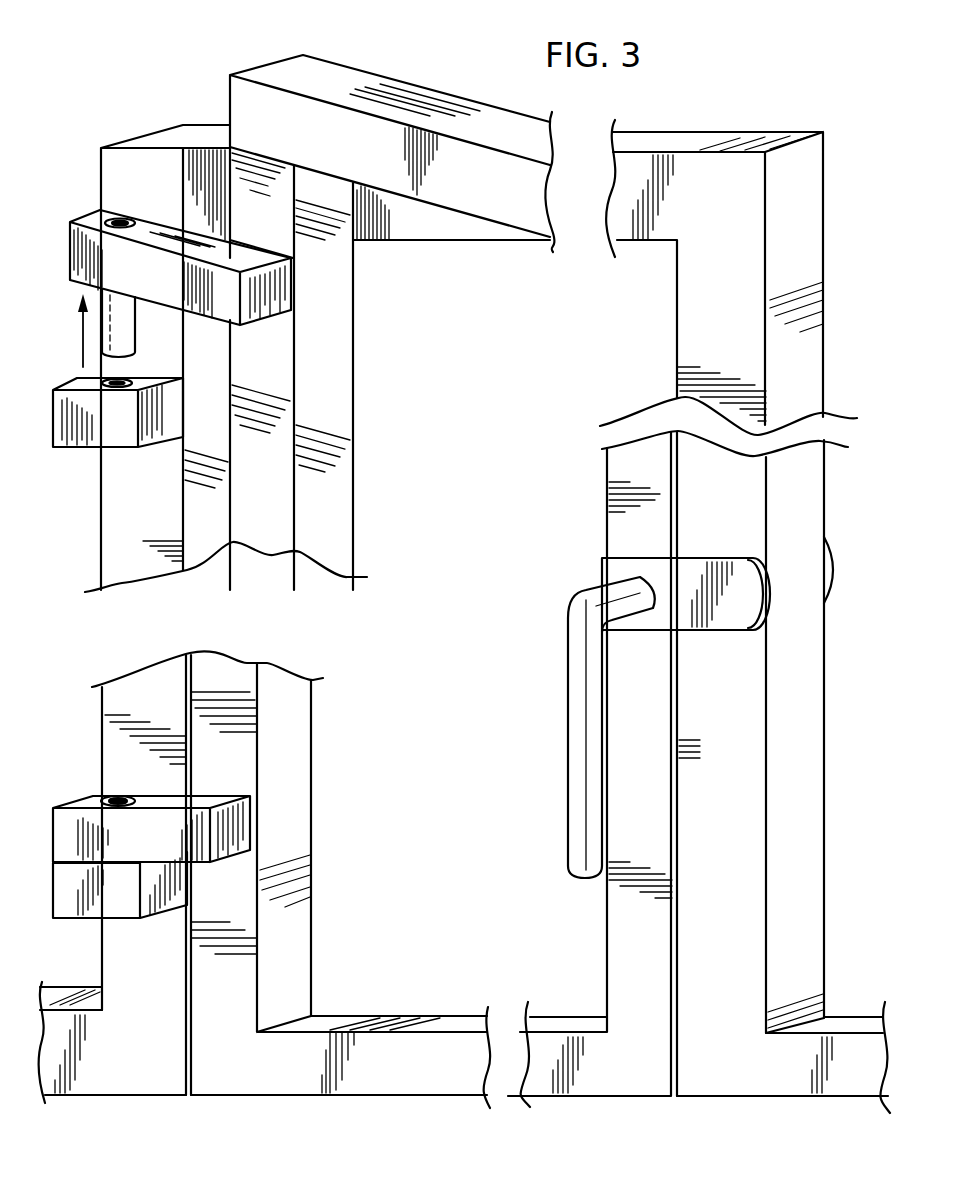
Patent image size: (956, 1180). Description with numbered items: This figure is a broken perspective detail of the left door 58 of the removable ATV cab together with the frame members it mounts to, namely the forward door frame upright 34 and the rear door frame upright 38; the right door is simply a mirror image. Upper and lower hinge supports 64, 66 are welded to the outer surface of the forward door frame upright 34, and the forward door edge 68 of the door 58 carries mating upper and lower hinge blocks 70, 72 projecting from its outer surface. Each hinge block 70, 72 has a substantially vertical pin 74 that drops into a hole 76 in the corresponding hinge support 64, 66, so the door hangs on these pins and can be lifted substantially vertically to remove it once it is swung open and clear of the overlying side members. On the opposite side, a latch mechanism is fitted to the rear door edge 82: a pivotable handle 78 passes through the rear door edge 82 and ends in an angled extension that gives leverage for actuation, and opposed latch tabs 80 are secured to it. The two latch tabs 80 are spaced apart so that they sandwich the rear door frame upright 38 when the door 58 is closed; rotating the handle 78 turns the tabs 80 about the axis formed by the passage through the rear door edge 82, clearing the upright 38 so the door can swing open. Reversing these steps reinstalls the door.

The left forward door frame upright 34 is at (150, 580).
The left rear door frame upright 38 is at (846, 448).
The left door 58 is at (200, 82).
The upper hinge support 64 is at (122, 448).
The lower hinge support 66 is at (120, 920).
The forward door edge 68 is at (330, 577).
The upper hinge block 70 is at (213, 318).
The lower hinge block 72 is at (203, 796).
The pin 74 is at (138, 331).
The hole 76 is at (124, 391).
The pivotable handle 78 is at (567, 708).
The latch tabs 80 is at (826, 575).
The rear door edge 82 is at (607, 478).